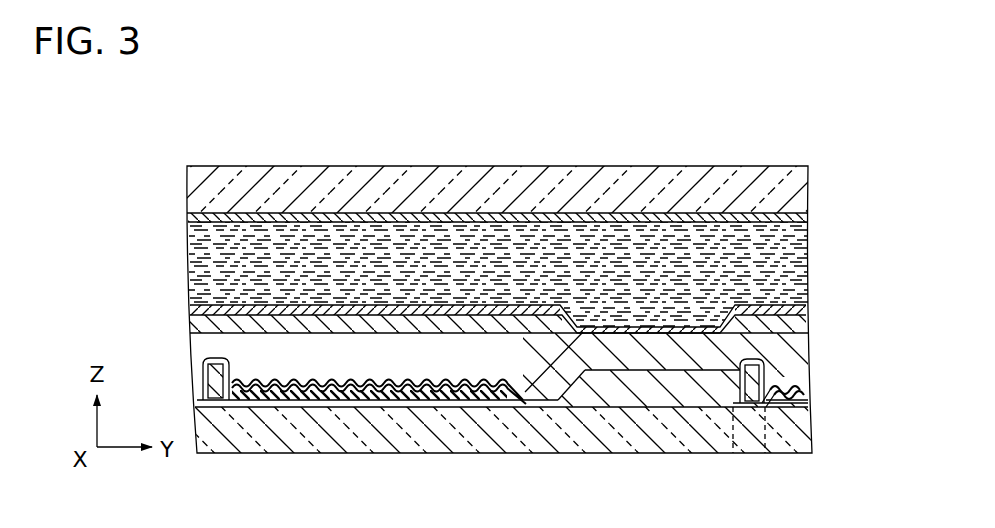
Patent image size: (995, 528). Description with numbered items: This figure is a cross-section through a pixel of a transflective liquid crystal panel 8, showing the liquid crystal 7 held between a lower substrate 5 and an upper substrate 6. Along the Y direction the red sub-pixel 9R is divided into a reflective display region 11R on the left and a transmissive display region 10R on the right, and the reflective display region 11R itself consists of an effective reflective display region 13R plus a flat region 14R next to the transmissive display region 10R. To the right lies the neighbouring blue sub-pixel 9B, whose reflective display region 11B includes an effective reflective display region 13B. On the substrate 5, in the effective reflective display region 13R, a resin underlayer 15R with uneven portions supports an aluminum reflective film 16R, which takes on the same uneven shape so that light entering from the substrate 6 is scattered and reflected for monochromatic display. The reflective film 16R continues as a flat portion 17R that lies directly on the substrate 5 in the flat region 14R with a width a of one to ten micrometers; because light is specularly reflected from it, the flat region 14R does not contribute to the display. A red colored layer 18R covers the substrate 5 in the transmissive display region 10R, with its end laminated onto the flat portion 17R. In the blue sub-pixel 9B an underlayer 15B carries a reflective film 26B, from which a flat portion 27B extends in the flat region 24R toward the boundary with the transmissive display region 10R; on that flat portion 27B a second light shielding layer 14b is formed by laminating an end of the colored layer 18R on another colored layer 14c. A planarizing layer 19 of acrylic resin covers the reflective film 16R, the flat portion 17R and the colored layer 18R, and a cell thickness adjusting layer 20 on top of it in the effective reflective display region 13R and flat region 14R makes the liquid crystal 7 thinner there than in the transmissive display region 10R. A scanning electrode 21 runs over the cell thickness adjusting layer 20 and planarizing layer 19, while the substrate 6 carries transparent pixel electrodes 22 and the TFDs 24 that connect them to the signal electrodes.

The liquid crystal display device 8 is at (166, 157).
The substrate 6 is at (213, 178).
The liquid crystal 7 is at (208, 262).
The substrate 5 is at (216, 445).
The TFD 24 is at (266, 223).
The pixel electrode 22 is at (344, 223).
The scanning electrode 21 is at (418, 315).
The cell thickness adjusting layer 20 is at (495, 312).
The planarizing layer 19 is at (450, 355).
The reflective film 16R is at (372, 392).
The underlayer 15R is at (283, 397).
The flat portion 17R is at (528, 402).
The colored layer 18R is at (612, 375).
The second light shielding layer 14b is at (764, 358).
The colored layer 14c is at (800, 370).
The reflective film 26B is at (807, 397).
The flat portion 27B is at (733, 402).
The underlayer 15B is at (787, 413).
The flat region 24R is at (768, 460).
The sub-pixel 9R is at (762, 57).
The sub-pixel 9B is at (768, 57).
The reflective display region 11R is at (225, 110).
The transmissive display region 10R is at (732, 362).
The reflective display region 11B is at (768, 110).
The effective reflective display region 13R is at (225, 305).
The flat region 14R is at (585, 362).
The effective reflective display region 13B is at (768, 307).
The width a is at (523, 280).